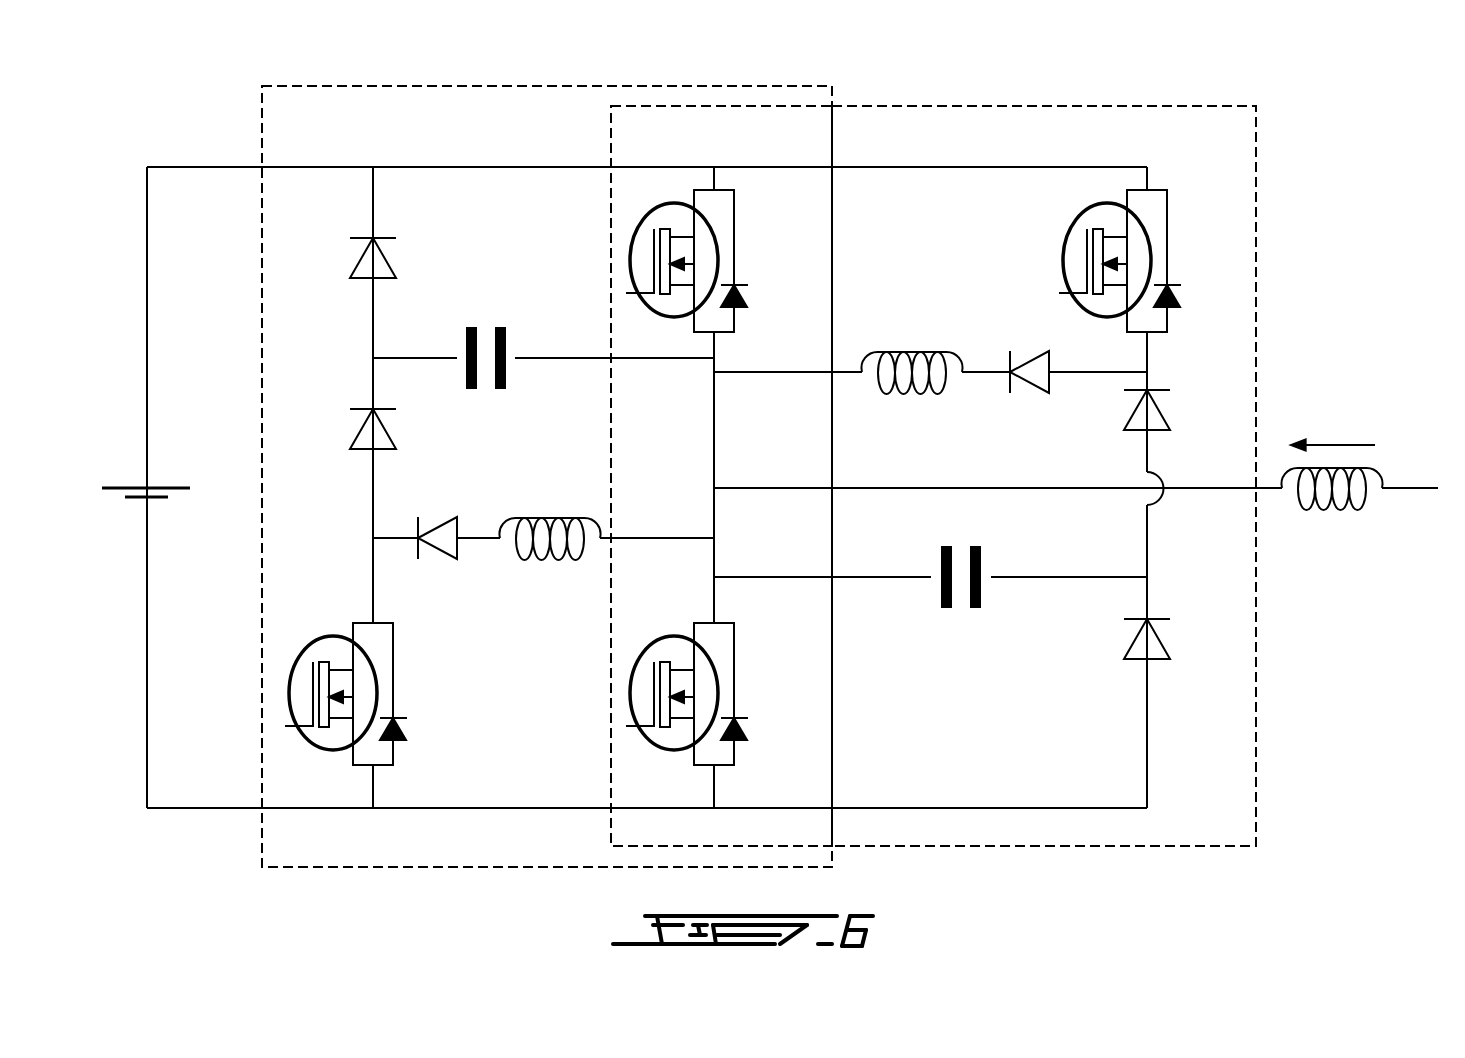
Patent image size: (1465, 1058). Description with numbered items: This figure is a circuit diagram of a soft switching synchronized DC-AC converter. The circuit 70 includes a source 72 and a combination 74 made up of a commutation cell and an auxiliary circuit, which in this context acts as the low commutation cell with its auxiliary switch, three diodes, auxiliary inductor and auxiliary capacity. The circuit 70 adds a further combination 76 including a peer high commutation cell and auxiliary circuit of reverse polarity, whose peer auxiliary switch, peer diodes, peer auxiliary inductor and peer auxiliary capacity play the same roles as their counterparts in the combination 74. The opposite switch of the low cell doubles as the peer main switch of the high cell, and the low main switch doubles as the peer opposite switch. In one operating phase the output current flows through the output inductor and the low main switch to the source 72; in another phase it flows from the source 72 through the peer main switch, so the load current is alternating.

The circuit 70 is at (1362, 136).
The source 72 is at (123, 487).
The combination 74 is at (262, 135).
The further combination 76 is at (1258, 740).